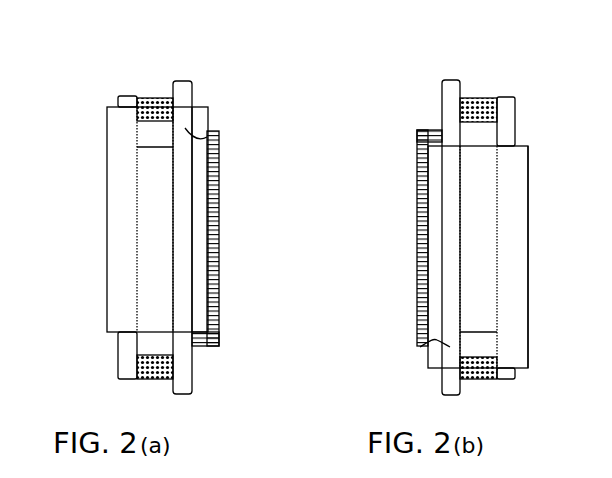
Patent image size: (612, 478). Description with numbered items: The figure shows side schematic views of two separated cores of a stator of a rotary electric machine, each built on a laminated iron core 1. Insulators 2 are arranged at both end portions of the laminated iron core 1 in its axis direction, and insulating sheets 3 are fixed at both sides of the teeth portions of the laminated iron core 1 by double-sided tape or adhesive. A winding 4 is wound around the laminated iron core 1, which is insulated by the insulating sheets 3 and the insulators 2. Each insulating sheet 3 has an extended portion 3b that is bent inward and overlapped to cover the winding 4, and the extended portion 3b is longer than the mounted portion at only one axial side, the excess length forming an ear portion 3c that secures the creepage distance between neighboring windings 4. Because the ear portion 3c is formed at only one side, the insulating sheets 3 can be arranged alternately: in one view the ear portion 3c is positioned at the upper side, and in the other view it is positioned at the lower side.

In FIG. 2A, the laminated iron core 1 is at (212, 235).
In FIG. 2B, the laminated iron core 1 is at (417, 240).
In FIG. 2A, the insulator 2 is at (150, 131).
In FIG. 2B, the insulator 2 is at (483, 132).
In FIG. 2A, the insulating sheet 3 is at (153, 203).
In FIG. 2B, the insulating sheet 3 is at (482, 205).
In FIG. 2A, the extended portion 3b is at (193, 283).
In FIG. 2B, the extended portion 3b is at (510, 248).
In FIG. 2A, the ear portion 3c is at (122, 125).
In FIG. 2B, the ear portion 3c is at (513, 352).
In FIG. 2A, the winding 4 is at (152, 113).
In FIG. 2B, the winding 4 is at (475, 98).